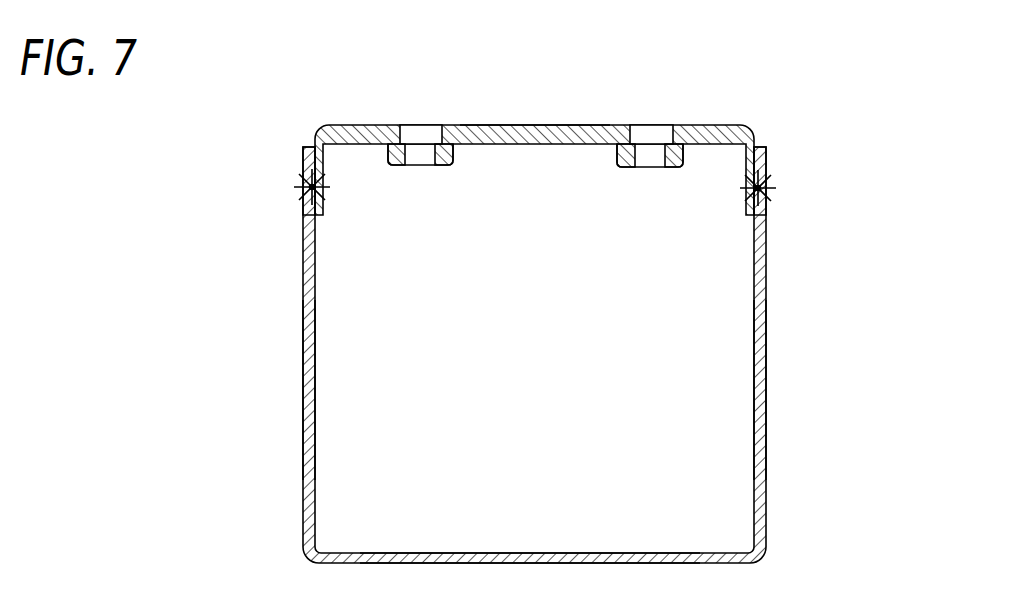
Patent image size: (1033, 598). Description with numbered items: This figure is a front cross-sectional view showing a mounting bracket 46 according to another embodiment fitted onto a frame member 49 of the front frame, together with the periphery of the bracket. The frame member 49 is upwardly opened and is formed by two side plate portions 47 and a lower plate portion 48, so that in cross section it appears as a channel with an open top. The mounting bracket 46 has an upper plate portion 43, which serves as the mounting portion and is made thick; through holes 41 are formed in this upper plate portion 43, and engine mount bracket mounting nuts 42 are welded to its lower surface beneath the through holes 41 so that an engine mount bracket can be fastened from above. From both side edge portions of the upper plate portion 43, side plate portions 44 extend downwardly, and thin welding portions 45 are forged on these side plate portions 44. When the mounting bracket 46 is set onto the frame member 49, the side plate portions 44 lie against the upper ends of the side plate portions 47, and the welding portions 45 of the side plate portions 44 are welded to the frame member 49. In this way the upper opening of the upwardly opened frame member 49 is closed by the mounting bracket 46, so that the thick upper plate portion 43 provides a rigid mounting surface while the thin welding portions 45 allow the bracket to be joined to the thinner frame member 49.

The through hole 41 is at (415, 125).
The engine mount bracket mounting nut 42 is at (453, 165).
The upper plate portion 43 is at (532, 125).
The side plate portion 44 is at (302, 163).
The welding portion 45 is at (302, 205).
The mounting bracket 46 is at (719, 114).
The side plate portion 47 is at (315, 367).
The lower plate portion 48 is at (532, 553).
The frame member 49 is at (776, 503).